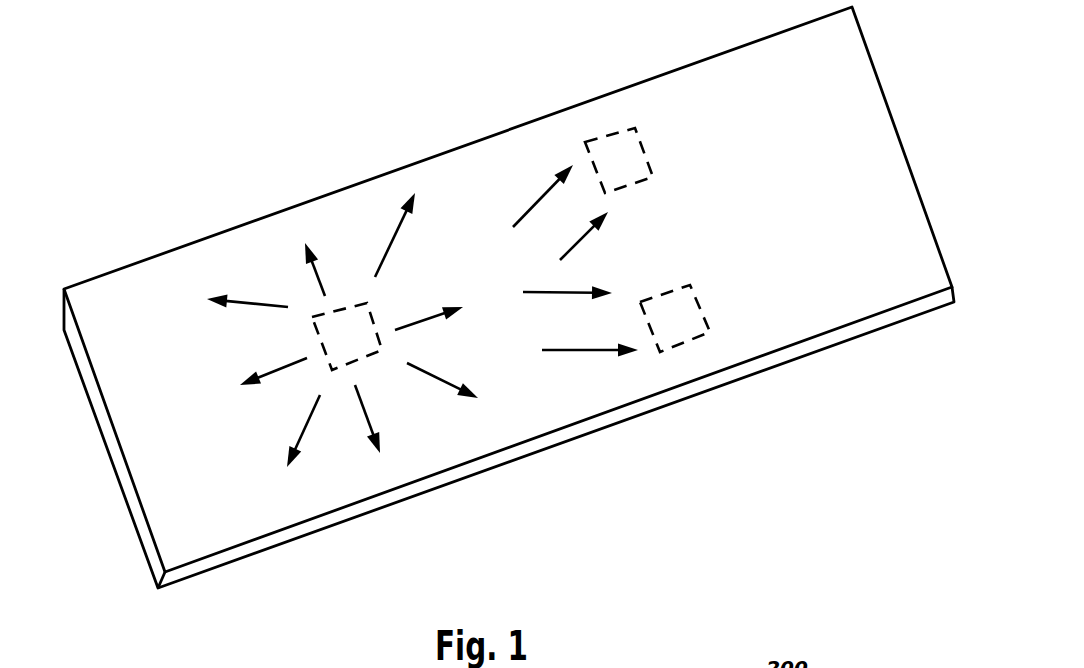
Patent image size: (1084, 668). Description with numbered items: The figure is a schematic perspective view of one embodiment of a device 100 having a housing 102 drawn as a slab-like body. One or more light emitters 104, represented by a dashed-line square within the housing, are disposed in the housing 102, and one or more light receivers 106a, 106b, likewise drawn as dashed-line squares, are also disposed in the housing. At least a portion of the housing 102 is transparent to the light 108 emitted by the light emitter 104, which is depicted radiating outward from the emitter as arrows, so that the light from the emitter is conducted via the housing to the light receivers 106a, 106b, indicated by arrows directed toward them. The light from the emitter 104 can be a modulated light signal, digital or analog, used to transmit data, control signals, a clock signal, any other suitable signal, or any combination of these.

The device 100 is at (285, 84).
The housing 102 is at (580, 438).
The light emitter 104 is at (355, 303).
The light receiver 106a is at (613, 130).
The light receiver 106b is at (692, 343).
The light 108 is at (258, 302).